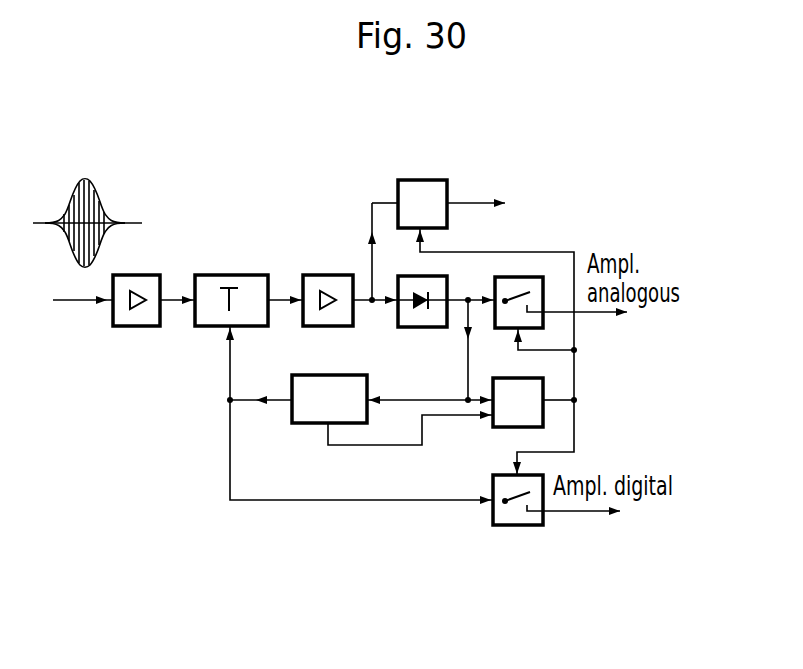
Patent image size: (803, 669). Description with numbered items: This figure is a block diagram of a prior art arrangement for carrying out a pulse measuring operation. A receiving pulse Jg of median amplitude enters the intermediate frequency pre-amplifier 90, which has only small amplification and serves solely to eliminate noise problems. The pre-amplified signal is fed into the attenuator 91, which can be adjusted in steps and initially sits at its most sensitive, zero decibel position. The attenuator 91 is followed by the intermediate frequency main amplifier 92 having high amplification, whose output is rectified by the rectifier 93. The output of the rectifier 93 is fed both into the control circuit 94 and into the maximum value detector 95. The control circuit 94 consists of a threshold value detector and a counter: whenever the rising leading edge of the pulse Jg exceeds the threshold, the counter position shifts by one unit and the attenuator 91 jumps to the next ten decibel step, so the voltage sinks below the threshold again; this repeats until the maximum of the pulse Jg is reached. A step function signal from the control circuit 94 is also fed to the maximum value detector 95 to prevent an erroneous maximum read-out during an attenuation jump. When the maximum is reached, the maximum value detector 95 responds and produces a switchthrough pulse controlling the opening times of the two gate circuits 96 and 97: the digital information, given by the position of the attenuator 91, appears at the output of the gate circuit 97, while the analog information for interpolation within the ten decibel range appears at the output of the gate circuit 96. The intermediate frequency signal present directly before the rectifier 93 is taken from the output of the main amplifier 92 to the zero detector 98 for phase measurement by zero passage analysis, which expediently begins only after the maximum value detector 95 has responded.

The receiving pulse Jg is at (98, 193).
The intermediate frequency pre-amplifier 90 is at (125, 275).
The attenuator 91 is at (221, 275).
The intermediate frequency main amplifier 92 is at (320, 275).
The rectifier 93 is at (430, 276).
The control circuit 94 is at (332, 375).
The maximum value detector 95 is at (512, 378).
The gate circuit 96 is at (528, 277).
The gate circuit 97 is at (503, 475).
The zero detector 98 is at (412, 180).